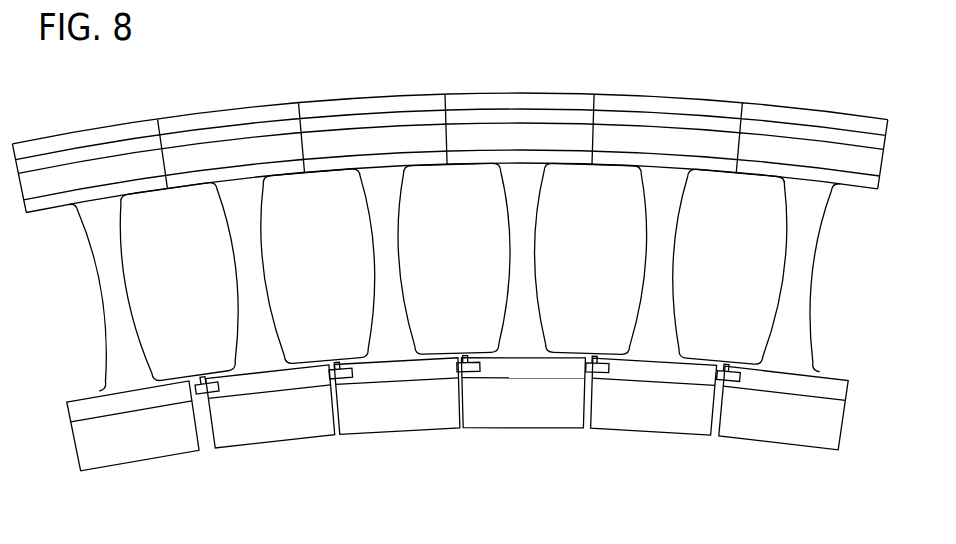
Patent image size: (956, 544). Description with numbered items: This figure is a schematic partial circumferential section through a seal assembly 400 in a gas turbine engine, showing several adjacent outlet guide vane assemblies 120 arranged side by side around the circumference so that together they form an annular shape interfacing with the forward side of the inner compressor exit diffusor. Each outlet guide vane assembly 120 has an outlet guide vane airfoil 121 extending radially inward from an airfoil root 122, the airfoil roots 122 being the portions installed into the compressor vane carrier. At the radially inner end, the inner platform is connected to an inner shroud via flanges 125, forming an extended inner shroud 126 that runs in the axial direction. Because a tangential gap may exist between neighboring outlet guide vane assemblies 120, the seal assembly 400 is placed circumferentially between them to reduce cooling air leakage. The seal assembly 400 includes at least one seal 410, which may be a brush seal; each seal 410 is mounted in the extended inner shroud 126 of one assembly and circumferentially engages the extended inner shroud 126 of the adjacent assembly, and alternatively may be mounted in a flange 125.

The outlet guide vane assembly 120 is at (132, 282).
The outlet guide vane airfoil 121 is at (793, 303).
The airfoil root 122 is at (812, 155).
The flange 125 is at (748, 415).
The extended inner shroud 126 is at (818, 387).
The seal assembly 400 is at (742, 361).
The seal 410 is at (731, 367).